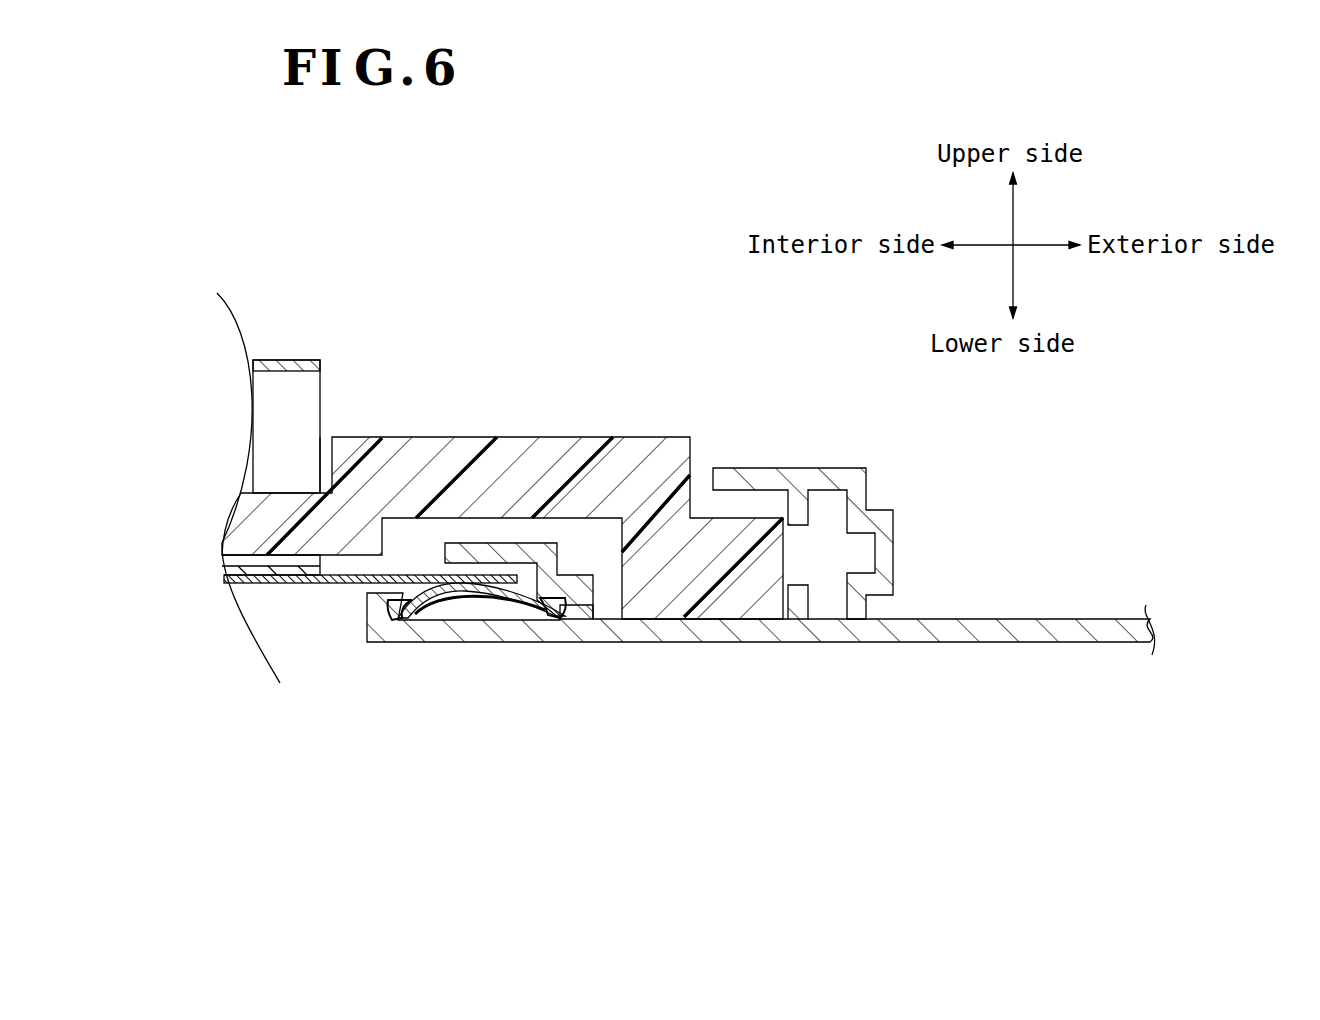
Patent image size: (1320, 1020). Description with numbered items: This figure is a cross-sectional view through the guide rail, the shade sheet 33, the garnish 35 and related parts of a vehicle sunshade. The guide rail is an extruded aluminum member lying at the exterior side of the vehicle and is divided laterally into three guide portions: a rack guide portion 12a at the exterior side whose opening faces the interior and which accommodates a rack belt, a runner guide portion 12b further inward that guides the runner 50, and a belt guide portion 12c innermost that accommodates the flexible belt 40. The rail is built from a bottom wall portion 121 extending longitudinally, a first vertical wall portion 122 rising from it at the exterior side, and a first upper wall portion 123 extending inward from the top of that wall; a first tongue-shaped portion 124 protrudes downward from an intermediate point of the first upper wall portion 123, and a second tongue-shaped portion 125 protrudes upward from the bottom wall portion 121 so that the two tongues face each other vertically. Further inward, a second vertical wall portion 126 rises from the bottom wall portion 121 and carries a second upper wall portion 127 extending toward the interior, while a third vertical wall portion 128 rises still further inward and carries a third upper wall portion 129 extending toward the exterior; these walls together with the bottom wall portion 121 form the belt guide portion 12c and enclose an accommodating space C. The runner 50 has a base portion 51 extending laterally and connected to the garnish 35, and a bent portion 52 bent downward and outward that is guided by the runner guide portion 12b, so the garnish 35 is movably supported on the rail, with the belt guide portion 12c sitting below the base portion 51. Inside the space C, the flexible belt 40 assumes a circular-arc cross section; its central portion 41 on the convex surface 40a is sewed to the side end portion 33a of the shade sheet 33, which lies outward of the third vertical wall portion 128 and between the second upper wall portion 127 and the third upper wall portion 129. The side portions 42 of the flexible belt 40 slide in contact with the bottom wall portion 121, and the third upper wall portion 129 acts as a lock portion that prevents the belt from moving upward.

The garnish 35 is at (297, 347).
The accommodating space C is at (410, 548).
The third upper wall portion 129 is at (360, 592).
The runner 50 is at (427, 427).
The base portion 51 is at (510, 475).
The bent portion 52 is at (710, 553).
The side end portion 33a is at (463, 587).
The second upper wall portion 127 is at (497, 553).
The central portion 41 is at (527, 597).
The second vertical wall portion 126 is at (593, 625).
The shade sheet 33 is at (344, 592).
The third vertical wall portion 128 is at (380, 620).
The flexible belt 40 is at (461, 598).
The convex surface 40a is at (563, 620).
The side portions 42 is at (390, 610).
The rack guide portion 12a is at (858, 652).
The runner guide portion 12b is at (676, 667).
The belt guide portion 12c is at (455, 652).
The bottom wall portion 121 is at (1012, 641).
The first vertical wall portion 122 is at (895, 545).
The first upper wall portion 123 is at (770, 470).
The first tongue-shaped portion 124 is at (803, 507).
The second tongue-shaped portion 125 is at (797, 600).